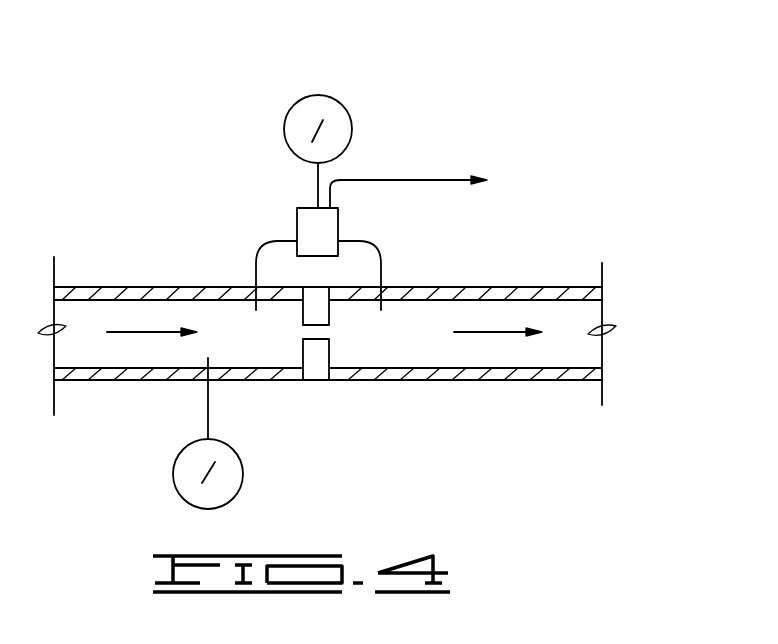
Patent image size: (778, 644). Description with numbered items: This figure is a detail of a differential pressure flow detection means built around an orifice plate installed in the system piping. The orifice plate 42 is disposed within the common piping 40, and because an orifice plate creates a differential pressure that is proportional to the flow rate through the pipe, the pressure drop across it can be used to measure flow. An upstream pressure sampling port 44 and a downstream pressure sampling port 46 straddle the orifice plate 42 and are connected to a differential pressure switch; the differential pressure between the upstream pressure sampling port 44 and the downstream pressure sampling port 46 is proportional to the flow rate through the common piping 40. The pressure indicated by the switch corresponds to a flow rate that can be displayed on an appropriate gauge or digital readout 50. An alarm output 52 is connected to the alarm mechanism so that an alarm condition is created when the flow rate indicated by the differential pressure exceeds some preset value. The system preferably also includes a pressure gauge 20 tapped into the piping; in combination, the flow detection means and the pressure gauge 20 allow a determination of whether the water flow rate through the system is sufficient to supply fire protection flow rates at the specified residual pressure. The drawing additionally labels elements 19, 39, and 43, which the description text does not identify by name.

The upstream pipe section 19 is at (140, 357).
The pressure gauge 20 is at (182, 495).
The valve actuator housing 39 is at (297, 227).
The common piping 40 is at (555, 348).
The orifice plate 42 is at (330, 352).
The upper plug / valve member 43 is at (308, 332).
The upstream pressure sampling port 44 is at (256, 270).
The downstream pressure sampling port 46 is at (380, 278).
The gauge or digital readout 50 is at (340, 102).
The alarm output 52 is at (413, 177).